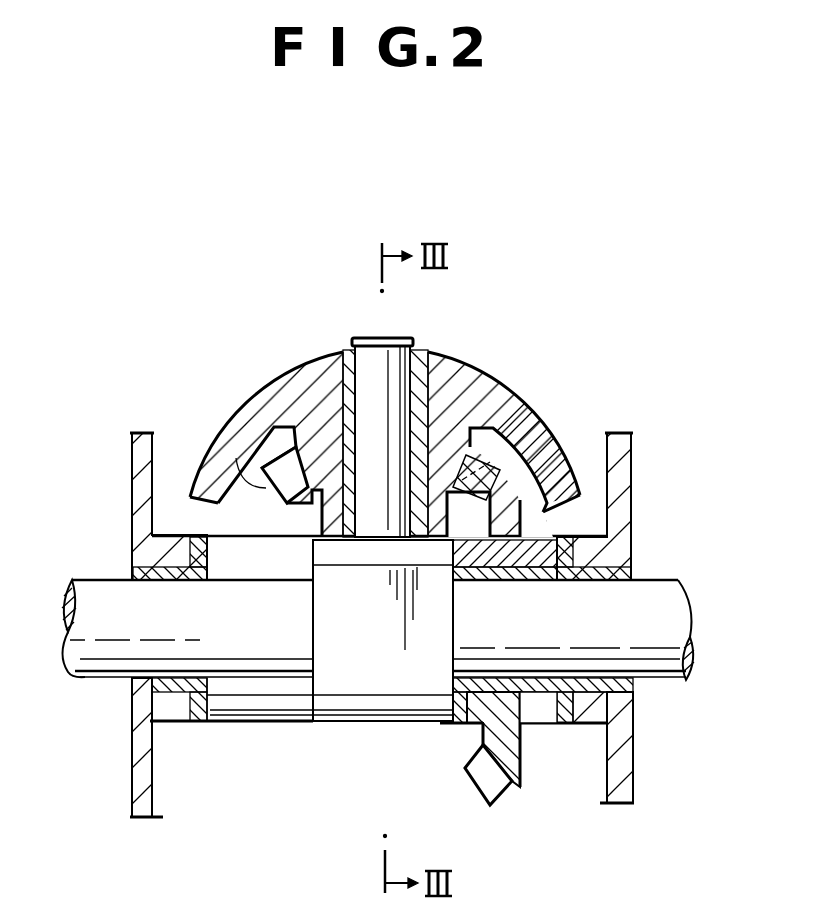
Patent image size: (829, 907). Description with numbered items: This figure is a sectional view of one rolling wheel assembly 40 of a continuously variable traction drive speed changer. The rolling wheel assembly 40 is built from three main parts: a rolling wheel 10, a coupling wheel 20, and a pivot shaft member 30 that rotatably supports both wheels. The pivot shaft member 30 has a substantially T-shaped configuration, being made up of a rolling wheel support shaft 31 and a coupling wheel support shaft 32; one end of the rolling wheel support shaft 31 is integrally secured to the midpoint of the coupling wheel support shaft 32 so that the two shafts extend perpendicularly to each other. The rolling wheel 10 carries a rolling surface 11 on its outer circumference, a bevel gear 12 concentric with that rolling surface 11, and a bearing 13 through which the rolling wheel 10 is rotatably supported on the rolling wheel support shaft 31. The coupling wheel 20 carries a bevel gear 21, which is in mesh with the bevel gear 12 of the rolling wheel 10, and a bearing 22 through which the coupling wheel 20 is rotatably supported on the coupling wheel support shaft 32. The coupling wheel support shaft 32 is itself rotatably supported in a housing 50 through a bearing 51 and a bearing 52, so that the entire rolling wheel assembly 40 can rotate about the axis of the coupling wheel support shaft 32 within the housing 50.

The rolling wheel 10 is at (310, 423).
The rolling surface 11 is at (250, 406).
The bevel gear 12 is at (232, 463).
The bearing 13 is at (350, 354).
The coupling wheel 20 is at (523, 745).
The bevel gear 21 is at (480, 790).
The bearing 22 is at (535, 700).
The pivot shaft member 30 is at (345, 678).
The rolling wheel support shaft 31 is at (404, 339).
The coupling wheel support shaft 32 is at (531, 598).
The rolling wheel assembly 40 is at (239, 783).
The housing 50 is at (130, 452).
The bearing 51 is at (130, 574).
The bearing 52 is at (632, 576).